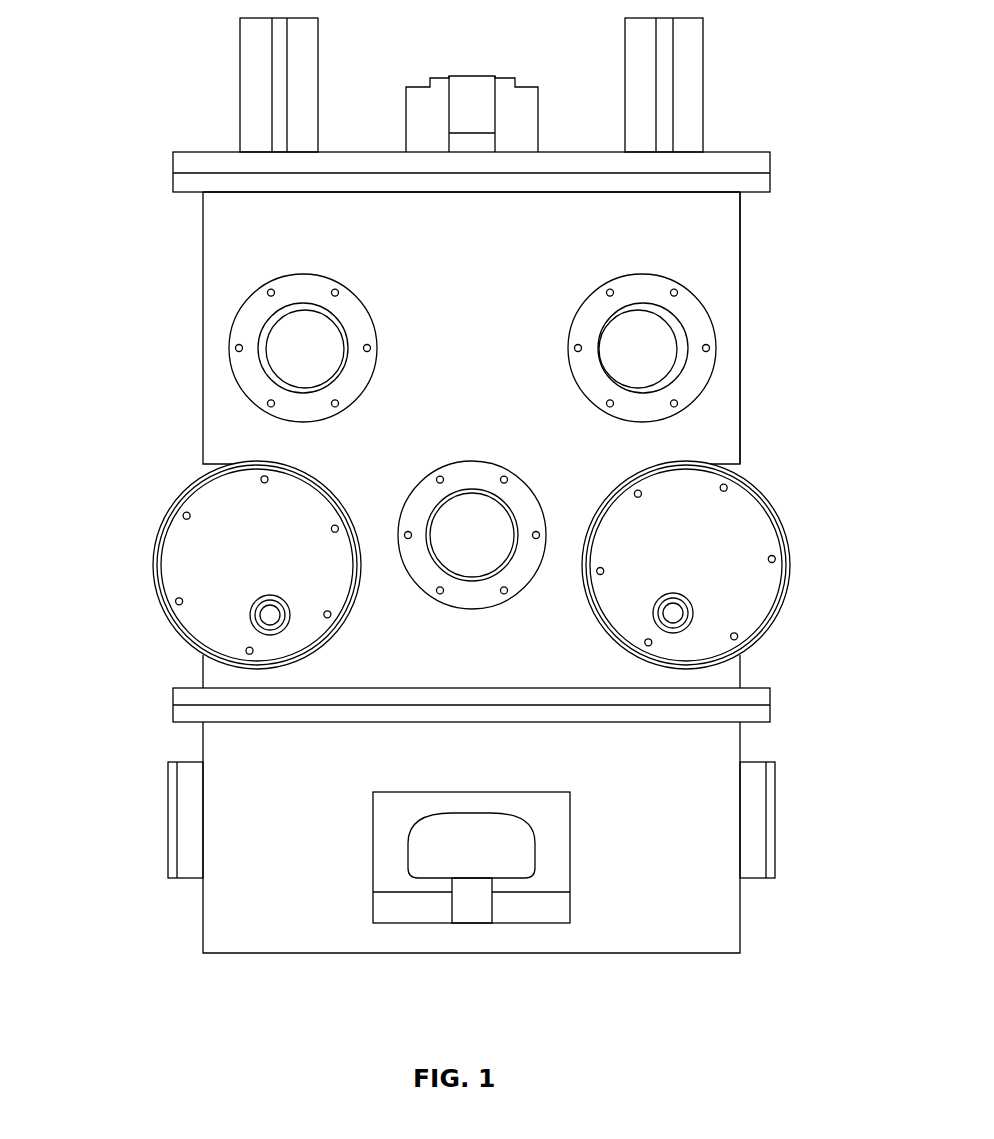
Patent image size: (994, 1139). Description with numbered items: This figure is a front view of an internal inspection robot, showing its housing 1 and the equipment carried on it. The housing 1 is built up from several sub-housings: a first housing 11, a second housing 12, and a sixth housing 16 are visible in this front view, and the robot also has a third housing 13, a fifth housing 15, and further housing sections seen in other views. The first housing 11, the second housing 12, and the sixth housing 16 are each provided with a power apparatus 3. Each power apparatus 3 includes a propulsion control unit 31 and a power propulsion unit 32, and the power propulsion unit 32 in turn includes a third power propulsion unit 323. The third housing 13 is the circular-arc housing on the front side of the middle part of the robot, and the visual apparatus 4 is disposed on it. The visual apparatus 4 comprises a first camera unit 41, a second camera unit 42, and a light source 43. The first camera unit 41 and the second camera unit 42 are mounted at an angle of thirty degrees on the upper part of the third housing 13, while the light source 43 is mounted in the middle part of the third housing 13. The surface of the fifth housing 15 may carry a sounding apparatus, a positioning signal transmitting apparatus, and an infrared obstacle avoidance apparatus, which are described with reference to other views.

The housing 1 is at (192, 408).
The first housing 11 is at (203, 215).
The second housing 12 is at (740, 355).
The third housing 13 is at (273, 447).
The fifth housing 15 is at (232, 150).
The sixth housing 16 is at (687, 953).
The power apparatus 3 is at (797, 548).
The propulsion control unit 31 is at (183, 833).
The power propulsion unit 32 is at (630, 610).
The third power propulsion unit 323 is at (473, 923).
The visual apparatus 4 is at (475, 419).
The first camera unit 41 is at (262, 357).
The second camera unit 42 is at (638, 358).
The light source 43 is at (488, 532).